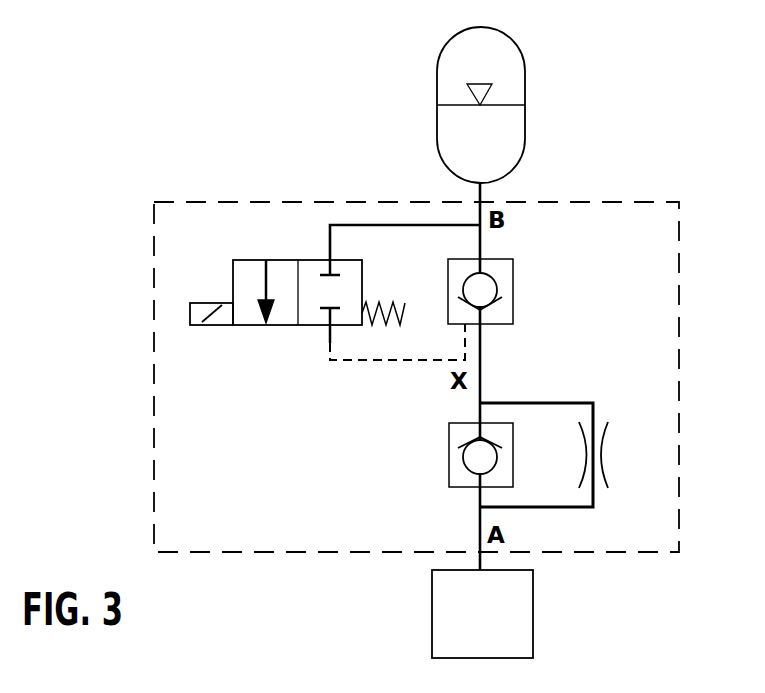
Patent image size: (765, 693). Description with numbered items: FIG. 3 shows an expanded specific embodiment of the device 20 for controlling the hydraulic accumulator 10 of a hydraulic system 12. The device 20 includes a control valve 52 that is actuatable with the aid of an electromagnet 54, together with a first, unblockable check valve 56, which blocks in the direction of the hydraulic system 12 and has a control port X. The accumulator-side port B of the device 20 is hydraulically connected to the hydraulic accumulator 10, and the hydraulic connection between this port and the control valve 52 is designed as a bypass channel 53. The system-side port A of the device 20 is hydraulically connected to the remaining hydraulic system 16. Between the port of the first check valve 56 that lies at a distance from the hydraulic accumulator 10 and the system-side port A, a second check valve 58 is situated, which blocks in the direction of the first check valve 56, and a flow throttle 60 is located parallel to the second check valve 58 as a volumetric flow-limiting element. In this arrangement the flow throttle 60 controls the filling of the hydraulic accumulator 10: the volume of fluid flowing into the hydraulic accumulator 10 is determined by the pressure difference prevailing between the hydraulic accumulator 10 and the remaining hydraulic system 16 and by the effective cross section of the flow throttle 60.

The hydraulic accumulator 10 is at (437, 77).
The hydraulic system 12 is at (180, 143).
The remaining hydraulic system 16 is at (533, 612).
The device 20 is at (614, 202).
The control valve 52 is at (290, 237).
The bypass channel 53 is at (392, 223).
The electromagnet 54 is at (190, 310).
The first check valve 56 is at (513, 290).
The second check valve 58 is at (449, 457).
The flow throttle 60 is at (603, 455).